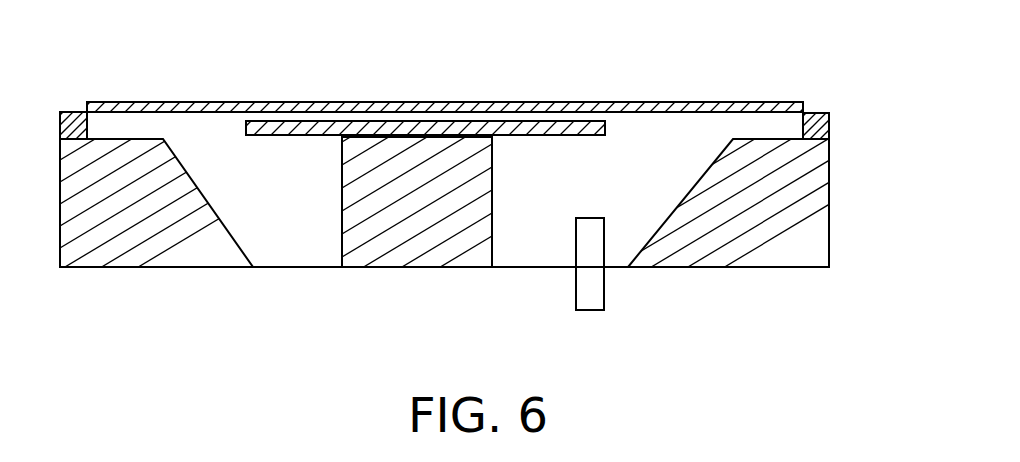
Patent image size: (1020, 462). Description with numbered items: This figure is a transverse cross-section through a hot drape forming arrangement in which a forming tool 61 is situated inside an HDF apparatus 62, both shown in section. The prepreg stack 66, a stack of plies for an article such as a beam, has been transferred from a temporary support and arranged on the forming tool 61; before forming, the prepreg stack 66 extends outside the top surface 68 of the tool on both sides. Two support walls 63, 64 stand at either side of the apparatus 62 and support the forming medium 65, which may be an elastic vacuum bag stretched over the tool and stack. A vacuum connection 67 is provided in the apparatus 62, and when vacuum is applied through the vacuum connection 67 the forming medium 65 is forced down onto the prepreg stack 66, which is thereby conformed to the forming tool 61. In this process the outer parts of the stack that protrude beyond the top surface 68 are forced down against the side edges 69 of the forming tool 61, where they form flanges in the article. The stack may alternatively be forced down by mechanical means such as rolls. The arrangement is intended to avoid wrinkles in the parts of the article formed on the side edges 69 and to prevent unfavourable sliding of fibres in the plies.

The forming tool 61 is at (417, 204).
The HDF apparatus 62 is at (845, 196).
The support wall 63 is at (158, 185).
The support wall 64 is at (742, 186).
The forming medium 65 is at (660, 109).
The prepreg stack 66 is at (315, 131).
The vacuum connection 67 is at (605, 285).
The top surface 68 is at (412, 137).
The side edges 69 is at (341, 213).